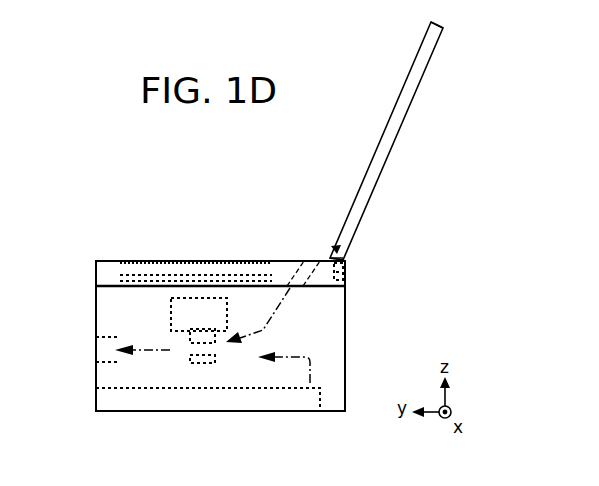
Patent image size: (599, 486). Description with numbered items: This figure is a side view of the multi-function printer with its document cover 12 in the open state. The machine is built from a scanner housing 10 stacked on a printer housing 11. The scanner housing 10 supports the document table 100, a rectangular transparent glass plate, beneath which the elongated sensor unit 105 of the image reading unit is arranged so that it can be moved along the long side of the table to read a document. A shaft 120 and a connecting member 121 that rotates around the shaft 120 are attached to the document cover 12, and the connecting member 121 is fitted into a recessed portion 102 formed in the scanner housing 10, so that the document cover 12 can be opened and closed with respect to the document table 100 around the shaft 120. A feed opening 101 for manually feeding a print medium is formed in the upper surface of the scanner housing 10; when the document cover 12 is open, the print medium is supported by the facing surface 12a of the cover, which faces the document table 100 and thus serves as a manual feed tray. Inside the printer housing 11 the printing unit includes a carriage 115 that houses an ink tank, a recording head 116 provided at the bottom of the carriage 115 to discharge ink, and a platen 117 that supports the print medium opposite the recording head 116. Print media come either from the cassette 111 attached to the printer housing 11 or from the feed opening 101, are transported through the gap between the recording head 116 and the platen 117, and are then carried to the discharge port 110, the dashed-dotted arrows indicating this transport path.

The document table 100 is at (128, 260).
The sensor unit 105 is at (110, 277).
The feed opening 101 is at (303, 258).
The carriage 115 is at (168, 307).
The recording head 116 is at (190, 335).
The platen 117 is at (194, 363).
The discharge port 110 is at (95, 356).
The cassette 111 is at (120, 401).
The scanner housing 10 is at (338, 278).
The recessed portion 102 is at (347, 286).
The connecting member 121 is at (330, 258).
The shaft 120 is at (340, 250).
The printer housing 11 is at (337, 337).
The document cover 12 is at (400, 106).
The facing surface 12a is at (400, 90).